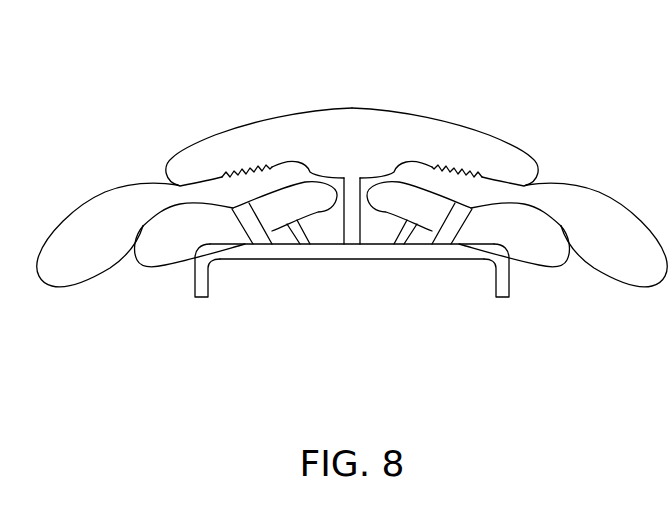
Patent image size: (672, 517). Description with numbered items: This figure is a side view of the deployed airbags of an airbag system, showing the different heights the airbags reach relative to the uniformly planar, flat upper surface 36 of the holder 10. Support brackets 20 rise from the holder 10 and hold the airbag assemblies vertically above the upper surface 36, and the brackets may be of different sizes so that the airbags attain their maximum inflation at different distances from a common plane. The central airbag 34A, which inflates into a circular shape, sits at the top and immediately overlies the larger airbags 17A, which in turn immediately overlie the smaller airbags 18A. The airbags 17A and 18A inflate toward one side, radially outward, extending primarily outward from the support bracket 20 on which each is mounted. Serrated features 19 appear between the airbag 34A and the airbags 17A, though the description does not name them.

The holder 10 is at (462, 262).
The airbag 17A is at (117, 207).
The airbag 18A is at (162, 243).
The serrated tooth 19 is at (240, 172).
The support bracket 20 is at (258, 236).
The airbag 34A is at (310, 110).
The upper surface 36 is at (240, 246).